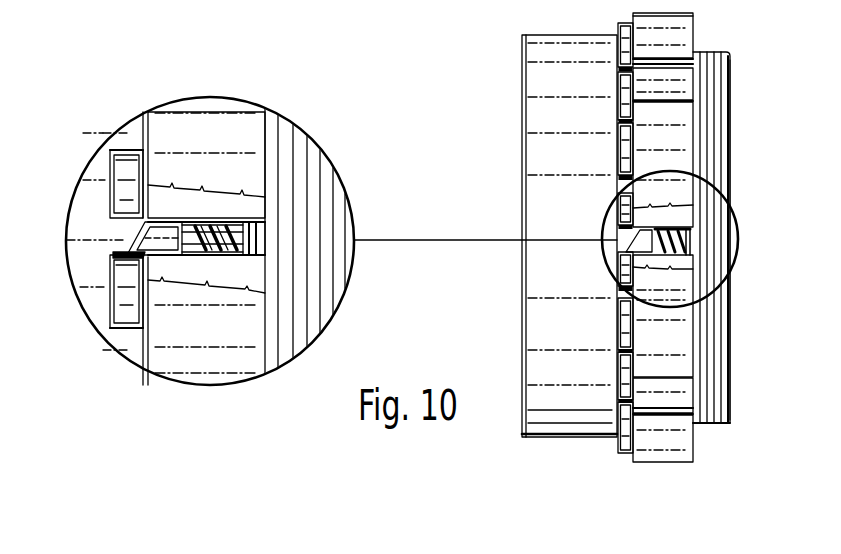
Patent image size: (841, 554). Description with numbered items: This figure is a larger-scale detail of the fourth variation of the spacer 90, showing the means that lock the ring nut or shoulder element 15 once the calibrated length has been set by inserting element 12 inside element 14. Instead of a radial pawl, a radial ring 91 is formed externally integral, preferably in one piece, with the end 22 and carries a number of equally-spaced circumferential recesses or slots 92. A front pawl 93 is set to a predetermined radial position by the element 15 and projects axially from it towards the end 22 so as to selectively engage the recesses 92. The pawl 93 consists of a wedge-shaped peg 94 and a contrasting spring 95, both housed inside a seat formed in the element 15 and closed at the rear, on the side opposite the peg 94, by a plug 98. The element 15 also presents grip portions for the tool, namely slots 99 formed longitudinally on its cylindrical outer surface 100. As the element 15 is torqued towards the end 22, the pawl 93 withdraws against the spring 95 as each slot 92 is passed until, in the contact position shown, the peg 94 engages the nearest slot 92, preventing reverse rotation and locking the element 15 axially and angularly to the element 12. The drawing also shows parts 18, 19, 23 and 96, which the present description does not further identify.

The element 12 is at (717, 430).
The element 14 is at (570, 62).
The ring nut 15 is at (680, 38).
The lining ring 18 is at (300, 172).
The cover ring 19 is at (738, 168).
The end 22 is at (102, 180).
The flange 23 is at (520, 203).
The spacer 90 is at (503, 108).
The radial ring 91 is at (132, 197).
The recesses or slots 92 is at (618, 30).
The front pawl 93 is at (207, 137).
The wedge-shaped peg 94 is at (162, 240).
The contrasting spring 95 is at (223, 250).
The spring 96 is at (212, 222).
The plug 98 is at (256, 228).
The slots 99 is at (675, 83).
The cylindrical outer surface 100 is at (672, 337).